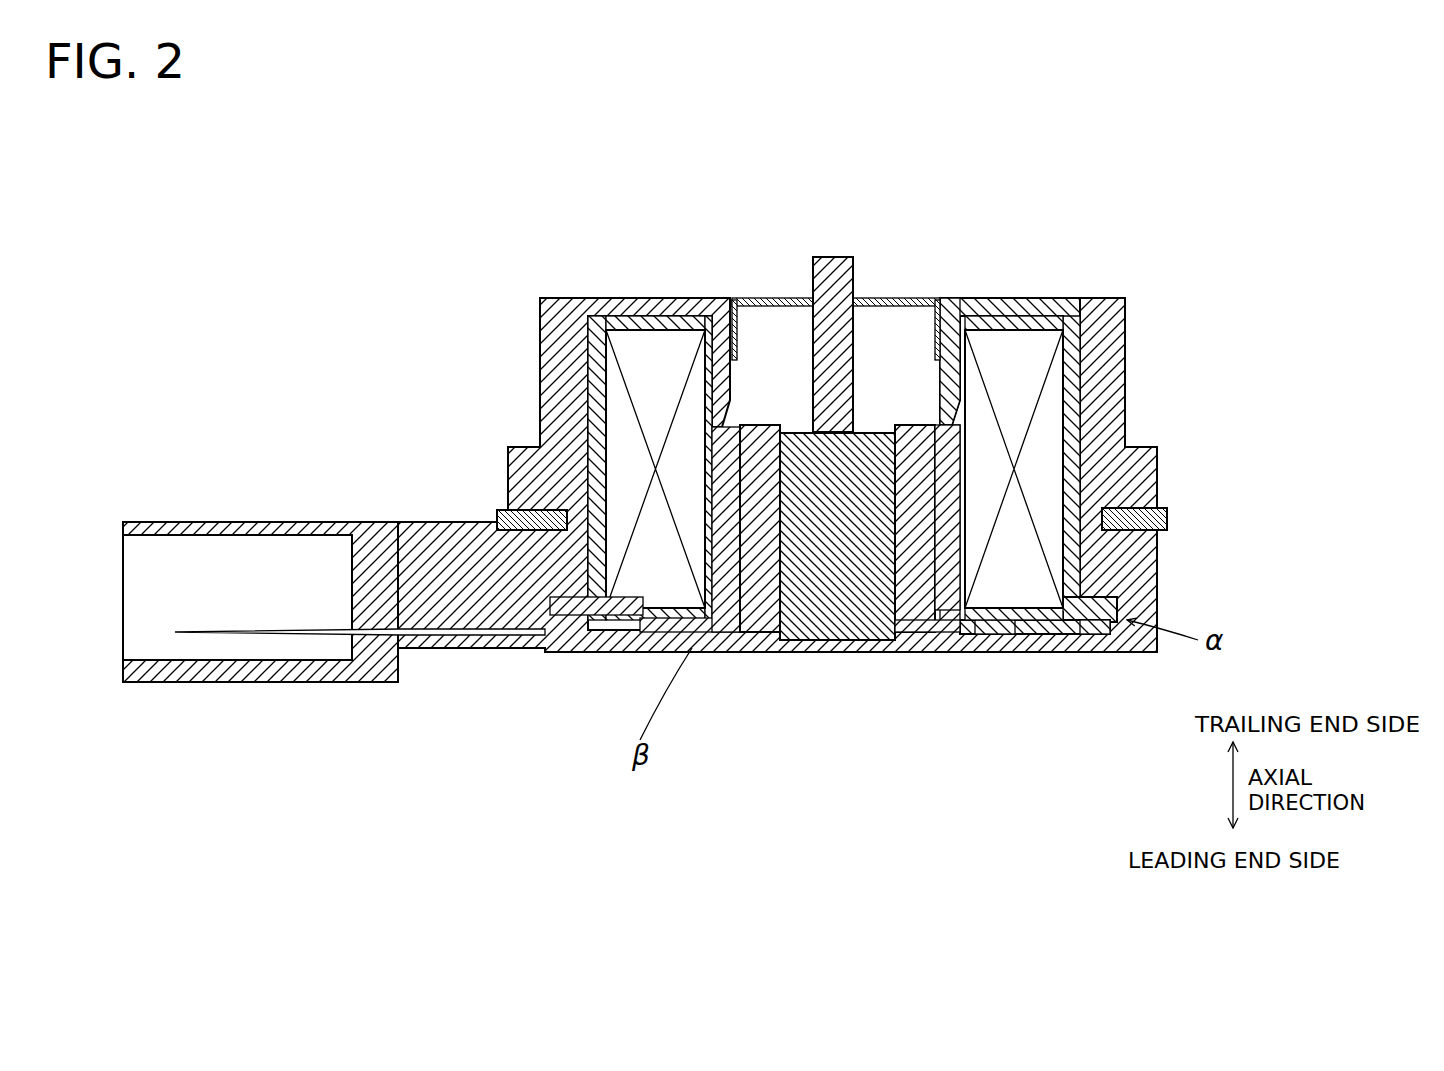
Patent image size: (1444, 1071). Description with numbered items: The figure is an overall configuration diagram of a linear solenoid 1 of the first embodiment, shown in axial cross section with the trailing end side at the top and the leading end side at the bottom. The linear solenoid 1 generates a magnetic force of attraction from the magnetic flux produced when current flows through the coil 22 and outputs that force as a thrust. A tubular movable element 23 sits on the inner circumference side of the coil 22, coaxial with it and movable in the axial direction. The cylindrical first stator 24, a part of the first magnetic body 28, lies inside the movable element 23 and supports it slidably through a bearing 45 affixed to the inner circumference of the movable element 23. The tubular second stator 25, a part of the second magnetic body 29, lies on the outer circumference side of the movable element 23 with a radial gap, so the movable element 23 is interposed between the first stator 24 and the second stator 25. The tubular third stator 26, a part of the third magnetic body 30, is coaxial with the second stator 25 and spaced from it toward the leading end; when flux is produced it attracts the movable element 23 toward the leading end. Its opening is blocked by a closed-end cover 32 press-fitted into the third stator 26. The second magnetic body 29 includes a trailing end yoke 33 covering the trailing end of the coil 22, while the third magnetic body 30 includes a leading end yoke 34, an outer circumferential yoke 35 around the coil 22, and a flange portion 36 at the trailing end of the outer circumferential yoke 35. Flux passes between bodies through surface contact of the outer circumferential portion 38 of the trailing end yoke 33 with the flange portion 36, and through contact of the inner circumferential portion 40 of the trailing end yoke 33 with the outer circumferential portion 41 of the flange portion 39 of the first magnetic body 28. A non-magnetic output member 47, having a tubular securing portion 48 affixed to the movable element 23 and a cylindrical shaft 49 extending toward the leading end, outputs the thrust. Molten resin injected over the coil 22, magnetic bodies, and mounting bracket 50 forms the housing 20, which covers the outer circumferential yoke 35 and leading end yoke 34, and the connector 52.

The linear solenoid 1 is at (413, 300).
The housing 20 is at (1108, 318).
The coil 22 is at (1025, 375).
The movable element 23 is at (922, 622).
The first stator 24 is at (830, 578).
The second stator 25 is at (955, 465).
The third stator 26 is at (945, 300).
The first magnetic body 28 is at (819, 600).
The second magnetic body 29 is at (1104, 601).
The third magnetic body 30 is at (1080, 405).
The cover 32 is at (750, 300).
The trailing end yoke 33 is at (1047, 640).
The leading end yoke 34 is at (990, 302).
The outer circumferential yoke 35 is at (1072, 375).
The flange portion 36 is at (1103, 595).
The outer circumferential portion 38 is at (1100, 630).
The flange portion 39 is at (897, 636).
The inner circumferential portion 40 is at (987, 637).
The outer circumferential portion 41 is at (963, 636).
The bearing 45 is at (760, 634).
The output member 47 is at (826, 375).
The securing portion 48 is at (776, 428).
The shaft 49 is at (828, 275).
The mounting bracket 50 is at (520, 512).
The connector 52 is at (232, 682).